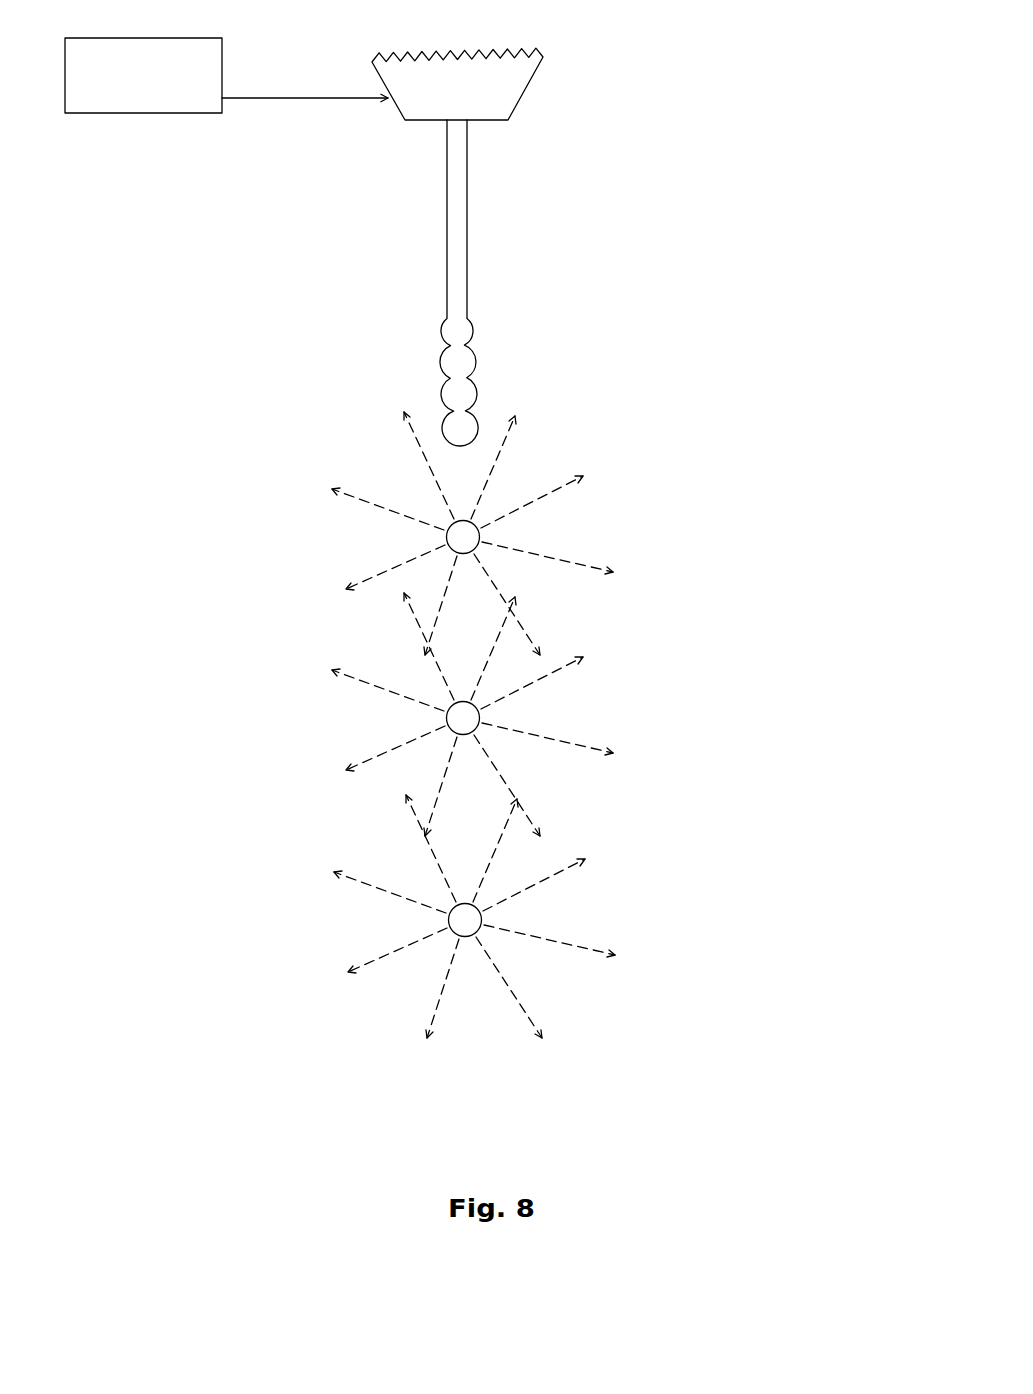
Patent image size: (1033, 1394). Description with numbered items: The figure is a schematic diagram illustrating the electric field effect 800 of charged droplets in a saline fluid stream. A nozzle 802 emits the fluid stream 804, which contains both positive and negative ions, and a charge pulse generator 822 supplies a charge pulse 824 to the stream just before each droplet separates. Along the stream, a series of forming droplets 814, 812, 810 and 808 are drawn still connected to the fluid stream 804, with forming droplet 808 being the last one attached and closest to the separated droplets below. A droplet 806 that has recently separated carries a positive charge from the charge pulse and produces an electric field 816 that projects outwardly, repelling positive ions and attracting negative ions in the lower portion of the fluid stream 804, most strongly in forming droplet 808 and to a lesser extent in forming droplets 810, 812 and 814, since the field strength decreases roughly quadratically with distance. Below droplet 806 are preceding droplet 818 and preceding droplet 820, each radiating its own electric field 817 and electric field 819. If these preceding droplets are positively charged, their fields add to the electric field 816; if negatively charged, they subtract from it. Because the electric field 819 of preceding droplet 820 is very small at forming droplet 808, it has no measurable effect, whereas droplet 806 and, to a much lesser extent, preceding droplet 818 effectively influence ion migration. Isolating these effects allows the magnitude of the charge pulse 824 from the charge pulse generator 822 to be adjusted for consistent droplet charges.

The electric field effect 800 is at (672, 1072).
The nozzle 802 is at (525, 90).
The fluid stream 804 is at (468, 200).
The droplet 806 is at (482, 538).
The forming droplet 808 is at (443, 432).
The forming droplet 810 is at (440, 392).
The forming droplet 812 is at (440, 362).
The forming droplet 814 is at (442, 322).
The electric field 816 is at (530, 443).
The electric field 817 is at (590, 712).
The preceding droplet 818 is at (448, 728).
The electric field 819 is at (565, 928).
The preceding droplet 820 is at (457, 937).
The charge pulse generator 822 is at (123, 38).
The charge pulse 824 is at (278, 98).